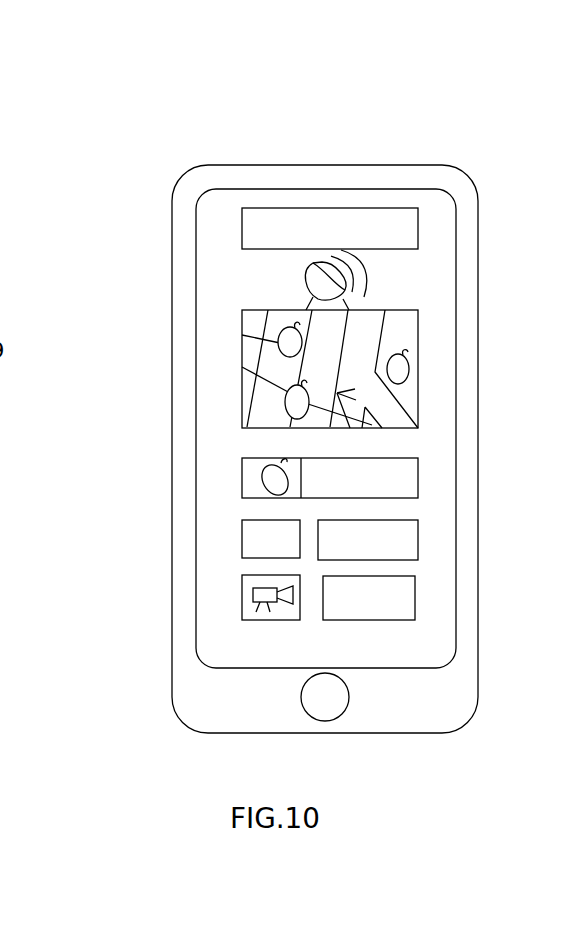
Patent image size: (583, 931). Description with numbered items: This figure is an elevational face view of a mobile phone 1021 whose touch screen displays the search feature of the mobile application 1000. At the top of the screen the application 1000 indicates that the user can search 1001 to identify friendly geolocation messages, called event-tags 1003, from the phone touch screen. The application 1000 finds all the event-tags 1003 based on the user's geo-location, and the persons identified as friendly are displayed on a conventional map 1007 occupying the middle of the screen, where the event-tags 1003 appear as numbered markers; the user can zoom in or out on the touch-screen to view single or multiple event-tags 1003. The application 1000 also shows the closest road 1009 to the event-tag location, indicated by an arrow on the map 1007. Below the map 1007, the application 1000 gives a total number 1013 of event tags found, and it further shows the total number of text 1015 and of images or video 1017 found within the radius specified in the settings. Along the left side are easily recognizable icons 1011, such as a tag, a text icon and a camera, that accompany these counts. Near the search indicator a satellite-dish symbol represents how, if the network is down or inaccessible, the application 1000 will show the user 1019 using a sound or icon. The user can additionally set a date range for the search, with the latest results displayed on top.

The mobile application 1000 is at (220, 118).
The search 1001 is at (342, 217).
The event-tags 1003 is at (306, 387).
The map 1007 is at (243, 390).
The closest road 1009 is at (337, 393).
The icons 1011 is at (242, 609).
The total number of event tags 1013 is at (418, 465).
The total number of text 1015 is at (418, 530).
The video 1017 is at (415, 607).
The network status indication 1019 is at (313, 290).
The mobile phone 1021 is at (467, 177).